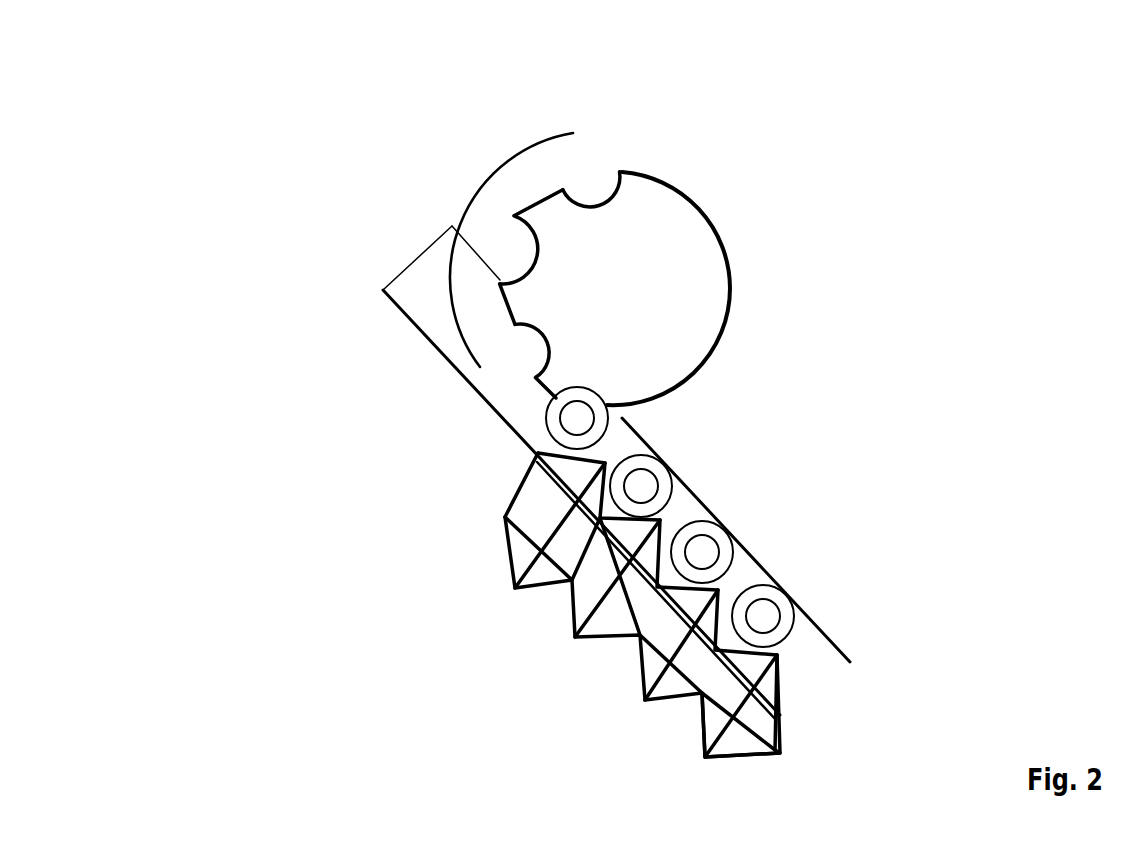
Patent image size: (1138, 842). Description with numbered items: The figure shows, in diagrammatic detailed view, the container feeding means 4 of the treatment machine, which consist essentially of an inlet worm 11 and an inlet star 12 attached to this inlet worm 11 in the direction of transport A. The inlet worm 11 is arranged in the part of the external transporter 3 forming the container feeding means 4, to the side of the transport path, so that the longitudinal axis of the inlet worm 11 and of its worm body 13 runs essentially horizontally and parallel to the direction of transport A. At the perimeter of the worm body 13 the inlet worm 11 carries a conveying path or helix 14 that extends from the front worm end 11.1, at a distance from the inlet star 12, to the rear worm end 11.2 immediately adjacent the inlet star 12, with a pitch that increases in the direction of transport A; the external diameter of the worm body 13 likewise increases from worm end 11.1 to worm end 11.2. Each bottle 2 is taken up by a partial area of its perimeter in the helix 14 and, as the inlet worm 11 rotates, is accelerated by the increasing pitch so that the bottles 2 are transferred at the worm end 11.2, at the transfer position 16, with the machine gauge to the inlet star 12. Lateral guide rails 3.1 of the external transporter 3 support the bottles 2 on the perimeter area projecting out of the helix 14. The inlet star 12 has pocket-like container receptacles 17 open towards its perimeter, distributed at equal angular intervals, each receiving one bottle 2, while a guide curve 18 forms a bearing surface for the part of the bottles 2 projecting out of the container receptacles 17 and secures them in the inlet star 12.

The bottle 2 is at (647, 482).
The external transporter 3 is at (610, 470).
The guide rail 3.1 is at (507, 428).
The container feeding means 4 is at (405, 613).
The inlet worm 11 is at (664, 632).
The worm end 11.1 is at (742, 758).
The worm end 11.2 is at (675, 328).
The inlet star 12 is at (588, 255).
The worm body 13 is at (665, 637).
The helix 14 is at (635, 647).
The transfer position 16 is at (540, 397).
The container receptacle 17 is at (575, 178).
The guide curve 18 is at (470, 200).
The direction of transport A is at (835, 703).